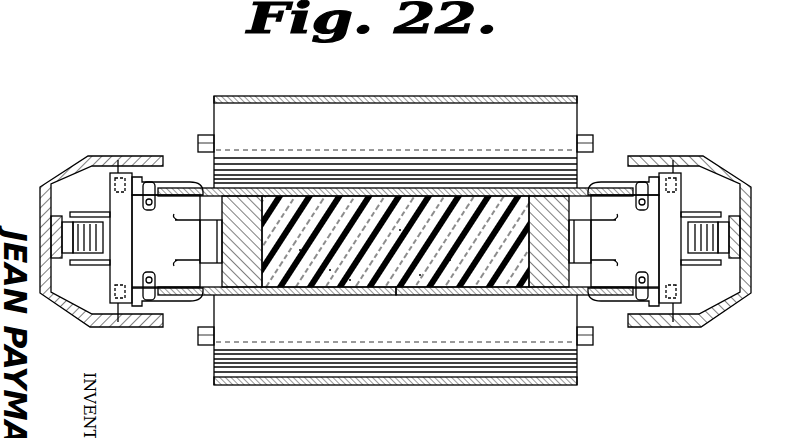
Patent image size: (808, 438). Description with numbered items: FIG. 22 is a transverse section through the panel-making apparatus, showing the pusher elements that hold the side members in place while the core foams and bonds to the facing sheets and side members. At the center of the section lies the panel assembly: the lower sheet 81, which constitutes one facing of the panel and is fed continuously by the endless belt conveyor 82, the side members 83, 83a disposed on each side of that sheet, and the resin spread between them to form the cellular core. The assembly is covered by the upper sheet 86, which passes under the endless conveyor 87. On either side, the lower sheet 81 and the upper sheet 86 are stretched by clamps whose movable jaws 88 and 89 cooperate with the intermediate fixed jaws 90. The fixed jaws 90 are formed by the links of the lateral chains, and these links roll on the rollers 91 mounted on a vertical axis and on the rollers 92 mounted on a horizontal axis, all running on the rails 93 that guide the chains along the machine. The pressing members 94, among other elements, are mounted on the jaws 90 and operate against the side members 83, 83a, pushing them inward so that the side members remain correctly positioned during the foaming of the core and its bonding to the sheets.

The sheet 81 is at (366, 289).
The endless belt conveyor 82 is at (447, 386).
The side member 83 is at (528, 287).
The side member 83a is at (248, 284).
The upper sheet 86 is at (349, 204).
The endless conveyor 87 is at (495, 96).
The movable jaw 88 is at (174, 182).
The movable jaw 89 is at (173, 300).
The intermediate fixed jaw 90 is at (147, 248).
The roller on a vertical axis 91 is at (80, 238).
The roller on a horizontal axis 92 is at (118, 172).
The rail 93 is at (73, 166).
The pressing member 94 is at (212, 237).